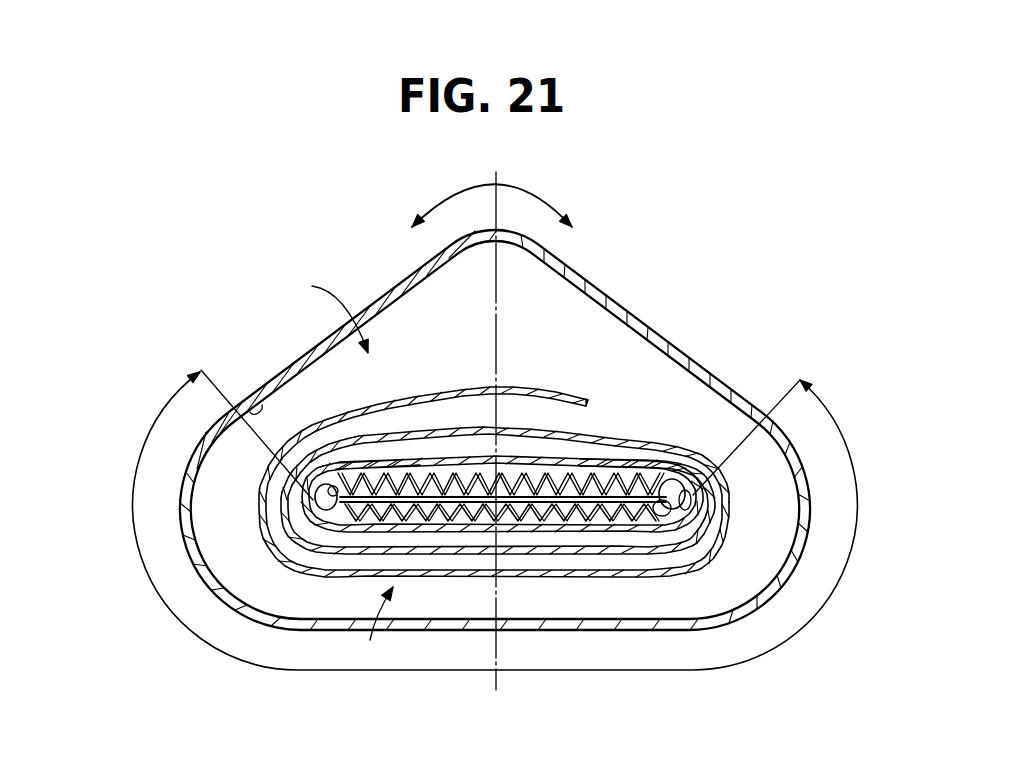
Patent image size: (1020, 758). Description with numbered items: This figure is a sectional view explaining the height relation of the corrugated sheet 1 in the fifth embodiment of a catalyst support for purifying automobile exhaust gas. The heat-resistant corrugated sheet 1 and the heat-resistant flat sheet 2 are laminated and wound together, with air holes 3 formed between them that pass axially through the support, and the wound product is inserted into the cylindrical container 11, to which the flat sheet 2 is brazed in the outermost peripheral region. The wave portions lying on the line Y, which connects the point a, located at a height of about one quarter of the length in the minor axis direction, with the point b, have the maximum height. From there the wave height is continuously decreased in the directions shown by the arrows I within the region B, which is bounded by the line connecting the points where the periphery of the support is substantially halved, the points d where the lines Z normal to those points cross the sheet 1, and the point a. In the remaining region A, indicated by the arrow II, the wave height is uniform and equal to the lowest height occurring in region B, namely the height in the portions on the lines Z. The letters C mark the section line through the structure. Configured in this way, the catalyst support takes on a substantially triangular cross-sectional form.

The corrugated sheet 1 is at (637, 540).
The flat sheet 2 is at (473, 578).
The air holes 3 is at (603, 470).
The cylindrical container 11 is at (607, 293).
The point a is at (505, 502).
The point b is at (505, 243).
The points d is at (310, 505).
The region A is at (375, 630).
The region B is at (327, 310).
The section line C- C is at (258, 408).
The arrows I is at (589, 200).
The arrow II is at (190, 657).
The line Y is at (500, 345).
The lines Z is at (263, 435).